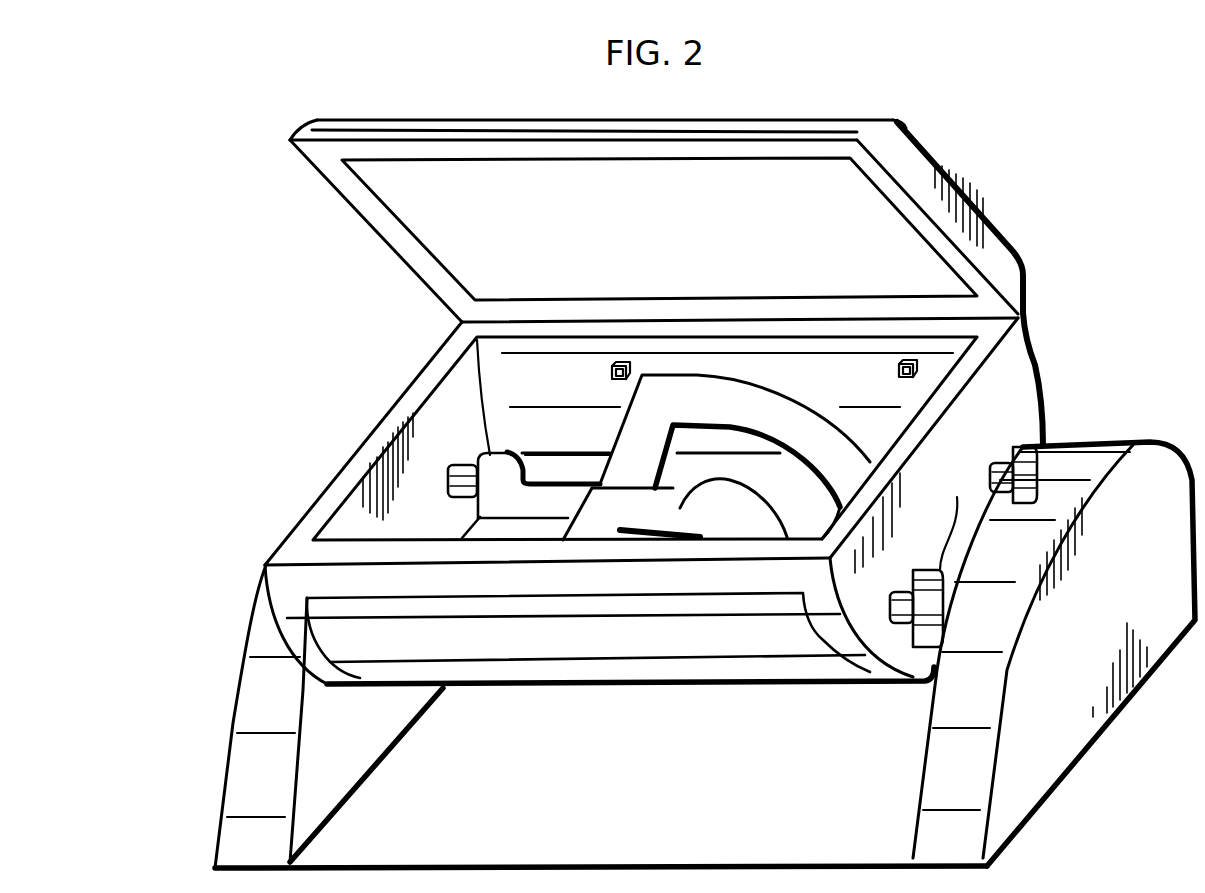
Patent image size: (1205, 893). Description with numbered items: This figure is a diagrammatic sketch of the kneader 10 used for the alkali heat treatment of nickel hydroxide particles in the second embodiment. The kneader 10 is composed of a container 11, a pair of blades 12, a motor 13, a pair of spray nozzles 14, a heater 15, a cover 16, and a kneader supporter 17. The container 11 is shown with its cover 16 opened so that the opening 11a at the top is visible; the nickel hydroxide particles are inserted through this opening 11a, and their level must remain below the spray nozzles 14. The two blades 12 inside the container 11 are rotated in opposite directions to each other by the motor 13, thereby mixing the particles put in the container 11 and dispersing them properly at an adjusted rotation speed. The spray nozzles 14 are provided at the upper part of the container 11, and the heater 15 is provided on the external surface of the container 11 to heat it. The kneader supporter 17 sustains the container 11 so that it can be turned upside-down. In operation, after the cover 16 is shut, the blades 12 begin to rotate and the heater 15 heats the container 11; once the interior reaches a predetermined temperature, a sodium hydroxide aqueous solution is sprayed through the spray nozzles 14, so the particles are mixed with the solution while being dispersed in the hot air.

The kneader 10 is at (1053, 303).
The container 11 is at (1030, 392).
The opening 11a is at (447, 419).
The blades 12 is at (731, 414).
The motor 13 is at (990, 484).
The spray nozzles 14 is at (612, 378).
The heater 15 is at (693, 654).
The cover 16 is at (373, 216).
The kneader supporter 17 is at (243, 757).